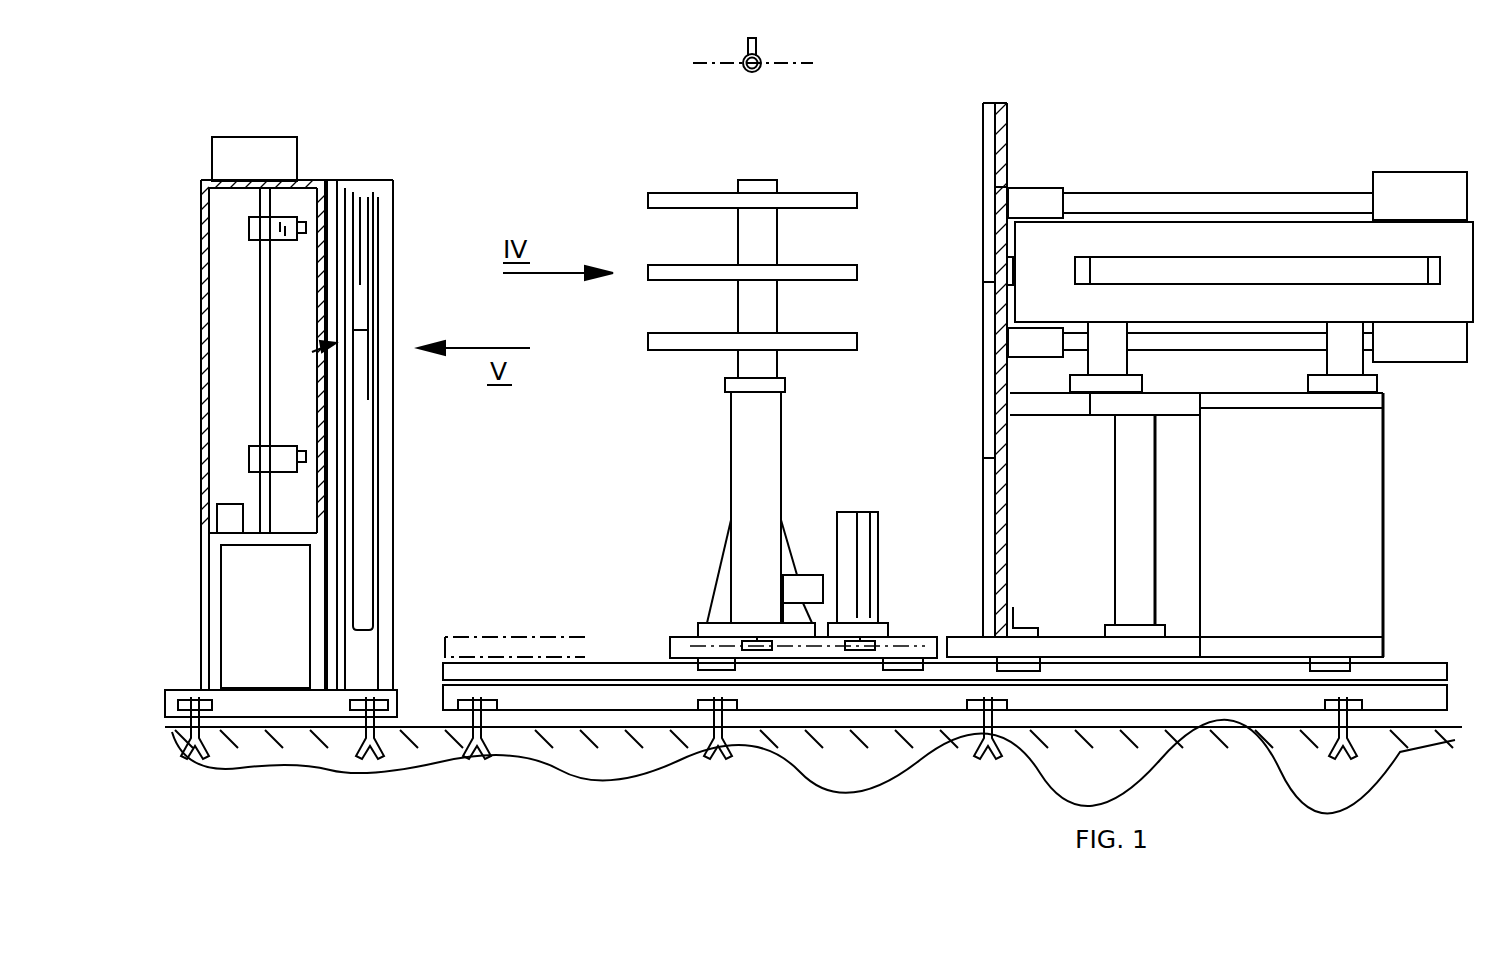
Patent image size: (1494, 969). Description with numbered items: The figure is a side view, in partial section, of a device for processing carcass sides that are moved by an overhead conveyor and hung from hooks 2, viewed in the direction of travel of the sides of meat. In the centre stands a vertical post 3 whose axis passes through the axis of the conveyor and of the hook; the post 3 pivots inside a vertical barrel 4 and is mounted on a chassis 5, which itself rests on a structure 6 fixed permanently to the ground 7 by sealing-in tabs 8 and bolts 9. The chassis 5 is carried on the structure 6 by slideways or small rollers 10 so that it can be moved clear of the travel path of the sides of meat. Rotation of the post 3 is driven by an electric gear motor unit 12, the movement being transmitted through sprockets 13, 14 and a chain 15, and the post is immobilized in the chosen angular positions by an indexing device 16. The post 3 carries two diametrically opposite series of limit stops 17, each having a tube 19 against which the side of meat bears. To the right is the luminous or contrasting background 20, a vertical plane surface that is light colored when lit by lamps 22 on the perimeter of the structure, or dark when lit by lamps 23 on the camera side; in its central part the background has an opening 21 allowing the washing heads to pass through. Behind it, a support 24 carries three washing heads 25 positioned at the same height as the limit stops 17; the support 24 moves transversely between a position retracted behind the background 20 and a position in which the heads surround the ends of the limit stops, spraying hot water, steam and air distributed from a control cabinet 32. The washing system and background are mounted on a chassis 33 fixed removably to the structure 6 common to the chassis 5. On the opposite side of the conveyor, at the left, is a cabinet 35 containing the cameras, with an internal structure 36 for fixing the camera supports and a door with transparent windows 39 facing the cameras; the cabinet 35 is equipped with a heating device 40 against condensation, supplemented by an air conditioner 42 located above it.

The hooks 2 is at (760, 69).
The vertical post 3 is at (770, 376).
The vertical barrel 4 is at (770, 441).
The chassis 5 is at (911, 646).
The structure 6 is at (1417, 694).
The ground 7 is at (1456, 720).
The sealing-in tabs 8 is at (996, 752).
The bolts 9 is at (1340, 705).
The slideways or small rollers 10 is at (707, 662).
The electric gear motor unit 12 is at (870, 553).
The sprocket 13 is at (860, 652).
The sprocket 14 is at (757, 652).
The chain 15 is at (818, 650).
The indexing device 16 is at (810, 583).
The limit stops 17 is at (794, 275).
The tube 19 is at (803, 208).
The background 20 is at (1010, 165).
The opening 21 is at (1005, 275).
The lamps 22 is at (983, 138).
The lamps 23 is at (362, 397).
The support 24 is at (1384, 176).
The washing heads 25 is at (1040, 198).
The control cabinet 32 is at (1380, 484).
The chassis 33 is at (1135, 560).
The cabinet 35 is at (334, 345).
The structure 36 is at (262, 288).
The transparent windows 39 is at (332, 235).
The heating device 40 is at (229, 520).
The air conditioner 42 is at (283, 168).